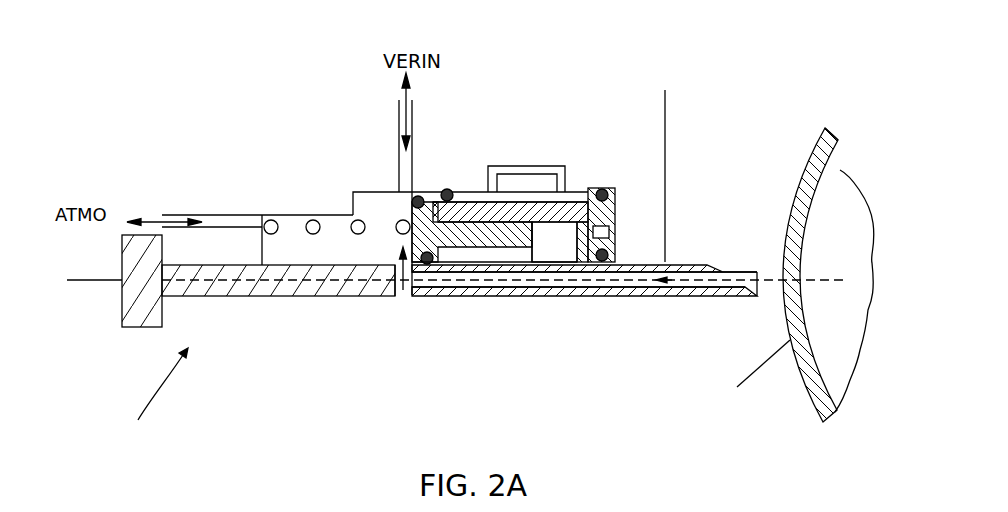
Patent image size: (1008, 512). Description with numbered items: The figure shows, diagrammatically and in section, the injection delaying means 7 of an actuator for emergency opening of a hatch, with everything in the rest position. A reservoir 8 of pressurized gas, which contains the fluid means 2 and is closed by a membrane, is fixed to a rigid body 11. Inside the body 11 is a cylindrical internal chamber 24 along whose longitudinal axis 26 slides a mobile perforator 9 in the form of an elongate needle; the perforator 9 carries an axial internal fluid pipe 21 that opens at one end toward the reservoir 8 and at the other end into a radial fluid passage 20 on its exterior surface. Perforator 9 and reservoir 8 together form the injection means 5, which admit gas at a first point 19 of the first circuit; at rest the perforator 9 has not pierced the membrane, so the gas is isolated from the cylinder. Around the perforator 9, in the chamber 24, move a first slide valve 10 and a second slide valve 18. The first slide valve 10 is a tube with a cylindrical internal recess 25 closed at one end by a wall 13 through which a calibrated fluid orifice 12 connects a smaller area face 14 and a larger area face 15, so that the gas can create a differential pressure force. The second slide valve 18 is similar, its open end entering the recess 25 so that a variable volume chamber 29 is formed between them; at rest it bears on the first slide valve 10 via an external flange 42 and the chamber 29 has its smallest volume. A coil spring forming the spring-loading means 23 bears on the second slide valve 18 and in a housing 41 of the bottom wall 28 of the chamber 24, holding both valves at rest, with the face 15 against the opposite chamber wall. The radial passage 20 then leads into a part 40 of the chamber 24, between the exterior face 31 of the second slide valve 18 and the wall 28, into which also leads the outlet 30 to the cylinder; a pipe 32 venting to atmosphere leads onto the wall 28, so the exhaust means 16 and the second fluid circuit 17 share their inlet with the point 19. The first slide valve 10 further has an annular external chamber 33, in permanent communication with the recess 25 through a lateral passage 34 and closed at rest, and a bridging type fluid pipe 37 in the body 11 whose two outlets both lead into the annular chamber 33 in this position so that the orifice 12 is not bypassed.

The fluid means 2 is at (829, 345).
The injection means 5 is at (727, 297).
The injection delaying means 7 is at (159, 397).
The reservoir of pressurized gas 8 is at (840, 172).
The mobile perforator 9 is at (643, 296).
The first slide valve 10 is at (617, 188).
The body 11 is at (668, 98).
The calibrated fluid orifice 12 is at (588, 210).
The wall 13 is at (577, 243).
The smaller area face 14 is at (560, 250).
The larger area face 15 is at (615, 223).
The exhaust means 16 is at (210, 215).
The second fluid circuit 17 is at (285, 233).
The second slide valve 18 is at (412, 240).
The first point 19 is at (728, 275).
The radial fluid passage 20 is at (403, 290).
The axial internal fluid pipe 21 is at (697, 283).
The spring-loading means 23 is at (263, 220).
The internal chamber 24 is at (372, 192).
The cylindrical internal recess 25 is at (530, 250).
The longitudinal axis 26 is at (97, 284).
The bottom wall 28 is at (360, 192).
The variable volume chamber 29 is at (457, 253).
The outlet 30 is at (400, 107).
The exterior face 31 is at (412, 202).
The pipe venting to atmospheric pressure 32 is at (172, 215).
The annular external chamber 33 is at (473, 192).
The lateral passage 34 is at (550, 215).
The bridging type fluid pipe 37 is at (533, 192).
The part of the internal chamber 40 is at (387, 193).
The housing 41 is at (272, 248).
The external flange 42 is at (428, 192).